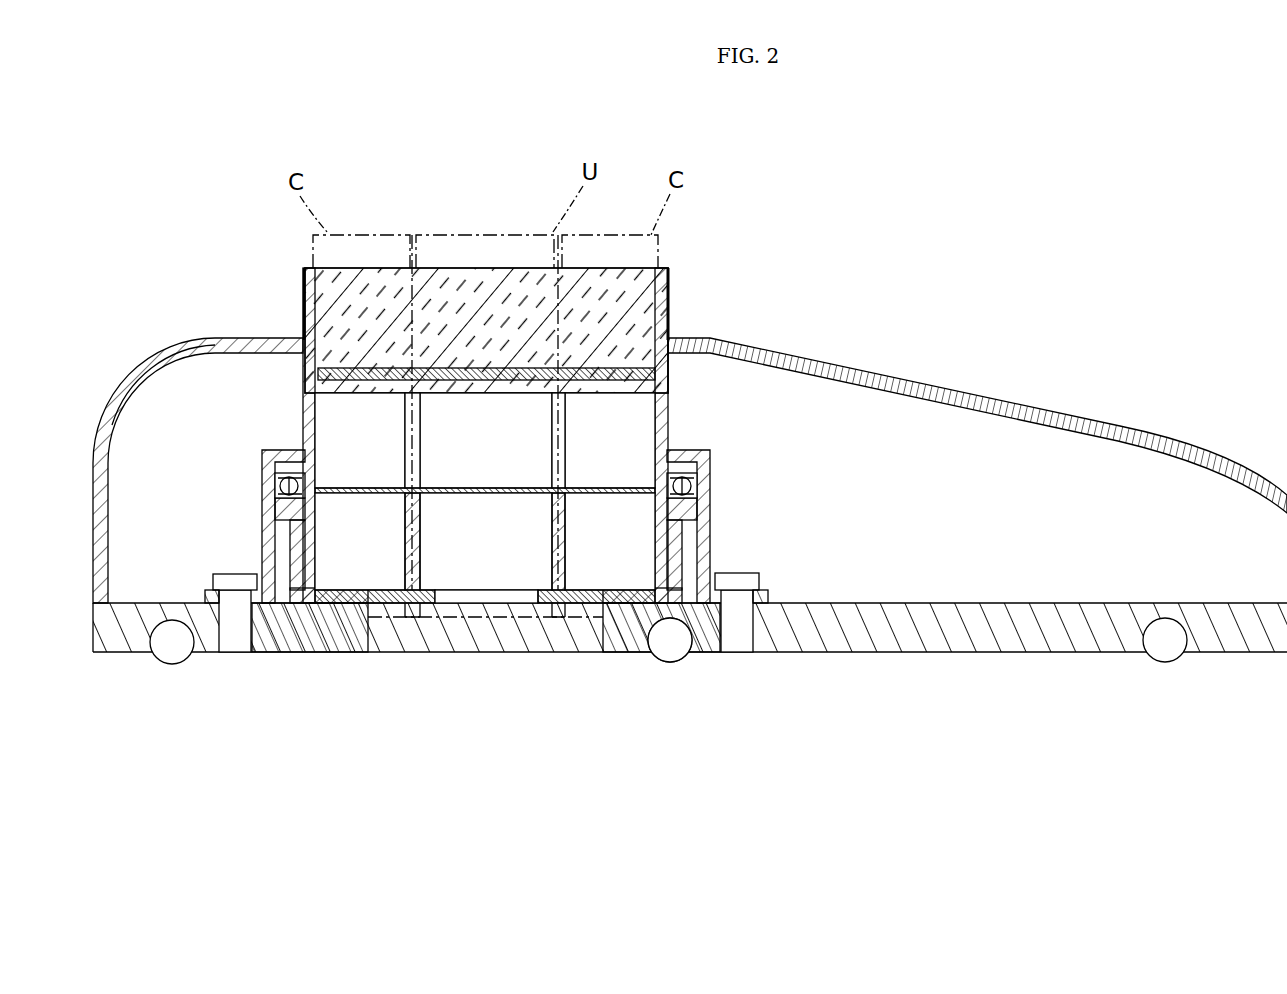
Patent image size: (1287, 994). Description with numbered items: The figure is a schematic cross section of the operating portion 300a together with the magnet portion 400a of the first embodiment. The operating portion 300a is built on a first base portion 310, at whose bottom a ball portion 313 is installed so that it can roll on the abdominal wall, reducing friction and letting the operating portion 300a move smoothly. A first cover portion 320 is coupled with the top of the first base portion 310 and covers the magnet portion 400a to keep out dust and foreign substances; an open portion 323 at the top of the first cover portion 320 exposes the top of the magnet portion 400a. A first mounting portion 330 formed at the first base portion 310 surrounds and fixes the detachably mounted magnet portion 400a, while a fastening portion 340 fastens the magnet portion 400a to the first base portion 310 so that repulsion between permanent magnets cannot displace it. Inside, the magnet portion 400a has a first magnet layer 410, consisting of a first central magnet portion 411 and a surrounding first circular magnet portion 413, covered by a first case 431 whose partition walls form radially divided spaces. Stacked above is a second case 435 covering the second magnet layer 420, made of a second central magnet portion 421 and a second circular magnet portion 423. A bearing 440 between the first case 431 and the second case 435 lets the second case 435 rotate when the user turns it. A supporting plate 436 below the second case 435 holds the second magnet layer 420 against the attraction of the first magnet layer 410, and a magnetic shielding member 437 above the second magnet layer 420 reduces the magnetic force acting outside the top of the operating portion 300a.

The operating portion 300a is at (690, 534).
The first base portion 310 is at (1028, 628).
The ball portion 313 is at (172, 648).
The first cover portion 320 is at (964, 420).
The open portion 323 is at (303, 340).
The first mounting portion 330 is at (712, 522).
The fastening portion 340 is at (753, 648).
The magnet portion 400a is at (503, 454).
The first magnet layer 410 is at (485, 633).
The first central magnet portion 411 is at (483, 568).
The first circular magnet portion 413 is at (378, 578).
The second magnet layer 420 is at (485, 311).
The second central magnet portion 421 is at (483, 410).
The second circular magnet portion 423 is at (375, 415).
The first case 431 is at (275, 510).
The second case 435 is at (343, 298).
The supporting plate 436 is at (618, 490).
The magnetic shielding member 437 is at (615, 368).
The bearing 440 is at (282, 487).